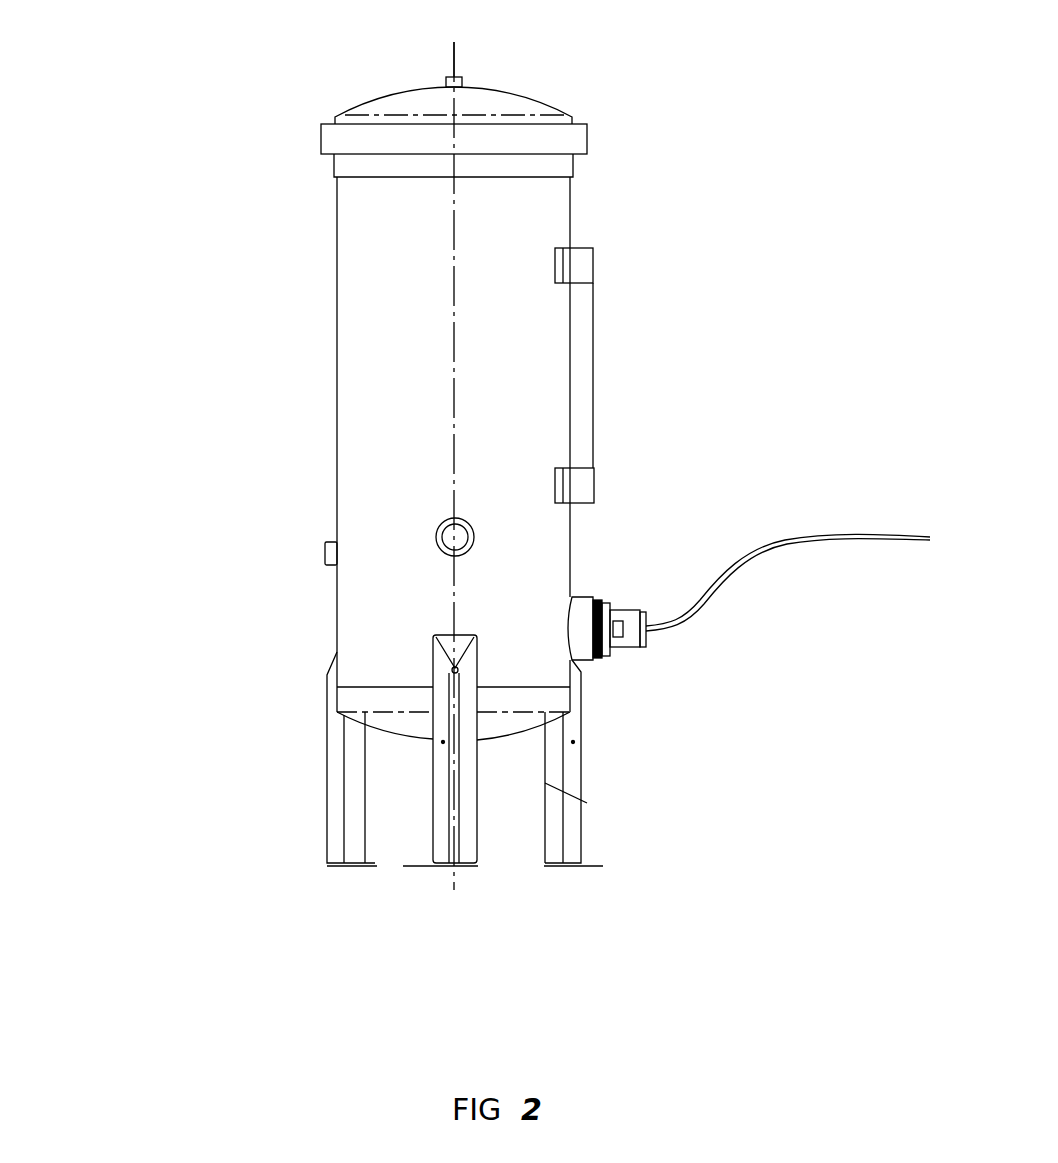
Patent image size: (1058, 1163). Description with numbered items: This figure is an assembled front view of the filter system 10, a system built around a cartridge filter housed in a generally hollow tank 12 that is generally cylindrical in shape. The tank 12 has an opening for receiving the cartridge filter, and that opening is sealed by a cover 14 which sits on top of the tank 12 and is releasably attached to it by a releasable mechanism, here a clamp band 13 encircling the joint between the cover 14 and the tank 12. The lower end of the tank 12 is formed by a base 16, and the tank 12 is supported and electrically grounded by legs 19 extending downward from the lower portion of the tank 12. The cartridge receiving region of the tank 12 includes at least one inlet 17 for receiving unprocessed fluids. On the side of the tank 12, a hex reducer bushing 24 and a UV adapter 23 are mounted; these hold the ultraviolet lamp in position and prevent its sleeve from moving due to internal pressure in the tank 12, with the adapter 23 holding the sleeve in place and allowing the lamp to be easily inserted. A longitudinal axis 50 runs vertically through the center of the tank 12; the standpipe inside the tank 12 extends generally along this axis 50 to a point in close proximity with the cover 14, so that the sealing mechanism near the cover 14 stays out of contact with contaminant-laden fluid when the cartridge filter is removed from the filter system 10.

The filter system 10 is at (203, 517).
The tank 12 is at (336, 433).
The clamp band 13 is at (332, 154).
The cover 14 is at (325, 74).
The base 16 is at (438, 835).
The inlet 17 is at (277, 603).
The legs 19 is at (379, 750).
The UV adapter 23 is at (770, 555).
The hex reducer bushing 24 is at (643, 539).
The longitudinal axis 50 is at (455, 62).